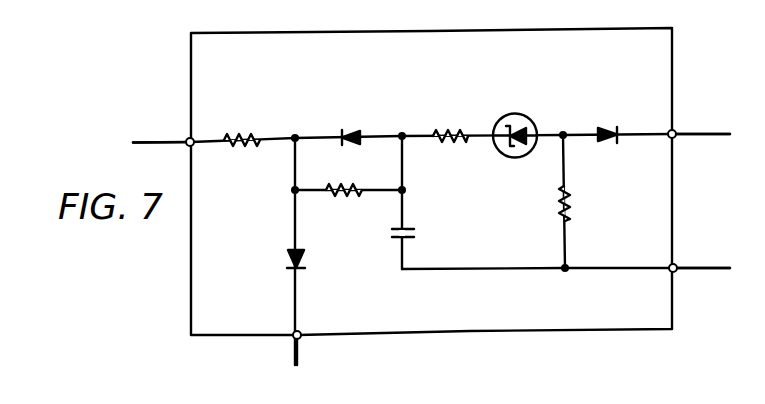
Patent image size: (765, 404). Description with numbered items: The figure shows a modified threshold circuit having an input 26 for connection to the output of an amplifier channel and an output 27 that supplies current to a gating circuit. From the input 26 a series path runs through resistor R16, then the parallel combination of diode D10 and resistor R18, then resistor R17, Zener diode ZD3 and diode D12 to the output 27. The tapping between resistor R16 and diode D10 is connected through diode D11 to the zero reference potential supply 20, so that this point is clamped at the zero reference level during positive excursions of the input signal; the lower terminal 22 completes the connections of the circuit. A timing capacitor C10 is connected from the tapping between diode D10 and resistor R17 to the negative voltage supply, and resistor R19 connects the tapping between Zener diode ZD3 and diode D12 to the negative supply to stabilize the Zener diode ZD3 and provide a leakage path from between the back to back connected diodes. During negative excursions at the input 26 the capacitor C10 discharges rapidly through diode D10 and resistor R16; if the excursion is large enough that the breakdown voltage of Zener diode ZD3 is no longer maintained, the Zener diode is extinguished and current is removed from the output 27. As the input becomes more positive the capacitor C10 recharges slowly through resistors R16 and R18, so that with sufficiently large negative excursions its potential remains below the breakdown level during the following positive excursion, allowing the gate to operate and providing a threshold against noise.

The input 26 is at (170, 136).
The output 27 is at (724, 130).
The zero reference potential supply 20 is at (677, 264).
The terminal 22 is at (301, 331).
The resistor R16 is at (242, 124).
The diode D10 is at (357, 123).
The resistor R17 is at (453, 122).
The Zener diode ZD3 is at (515, 122).
The diode D12 is at (608, 120).
The resistor R19 is at (588, 203).
The resistor R18 is at (344, 207).
The timing capacitor C10 is at (426, 233).
The diode D11 is at (277, 261).